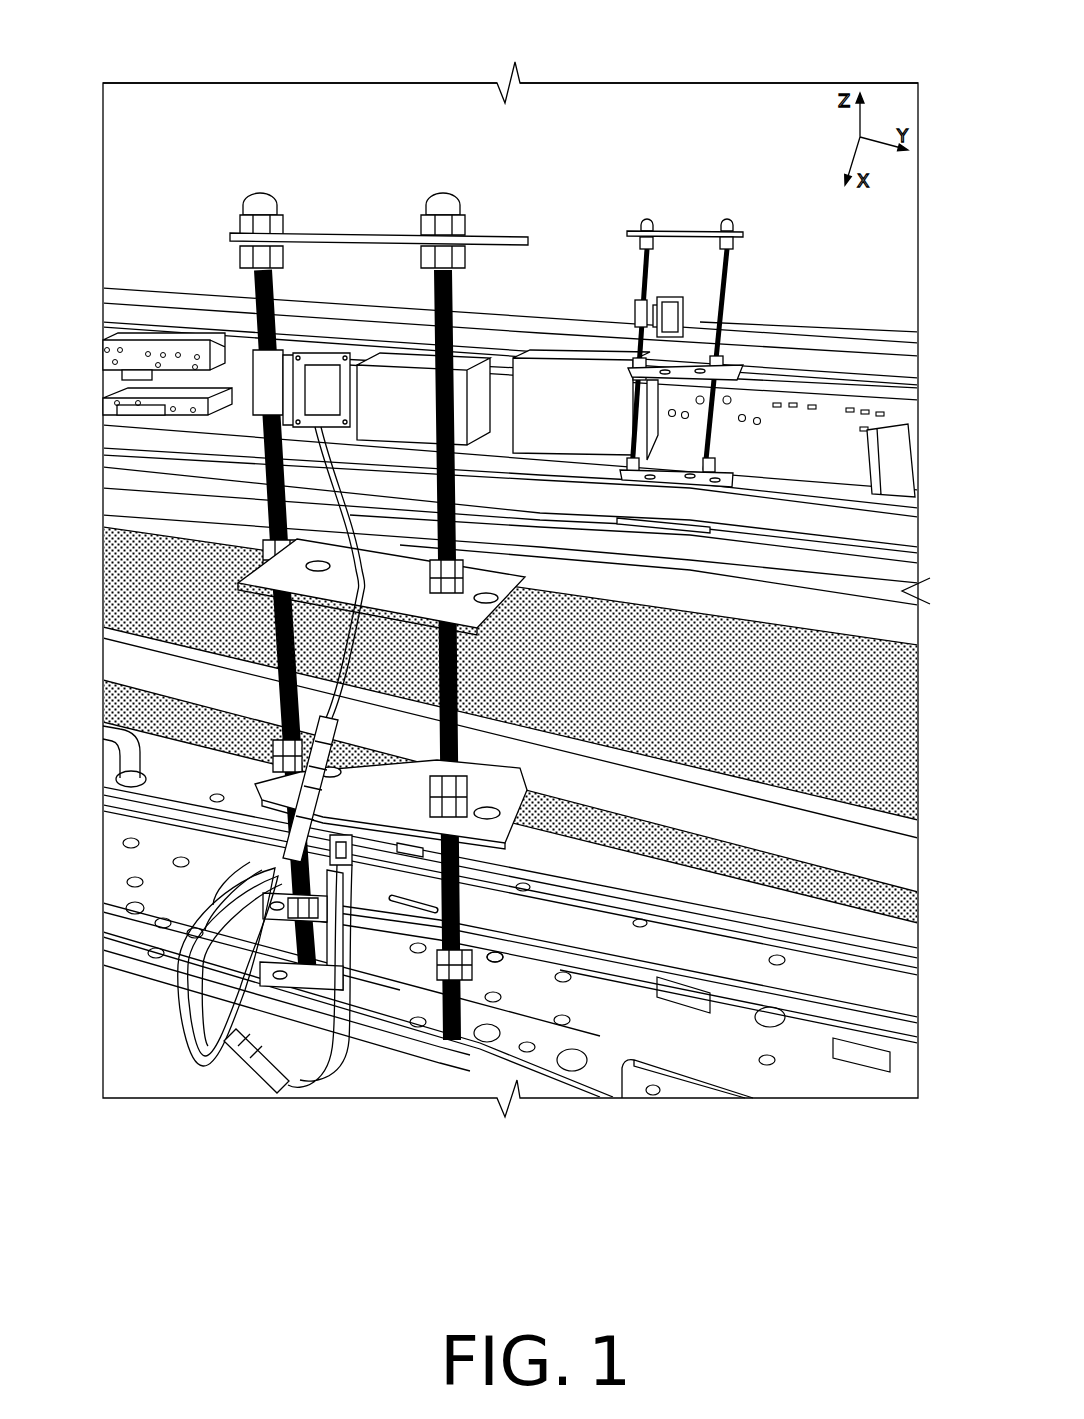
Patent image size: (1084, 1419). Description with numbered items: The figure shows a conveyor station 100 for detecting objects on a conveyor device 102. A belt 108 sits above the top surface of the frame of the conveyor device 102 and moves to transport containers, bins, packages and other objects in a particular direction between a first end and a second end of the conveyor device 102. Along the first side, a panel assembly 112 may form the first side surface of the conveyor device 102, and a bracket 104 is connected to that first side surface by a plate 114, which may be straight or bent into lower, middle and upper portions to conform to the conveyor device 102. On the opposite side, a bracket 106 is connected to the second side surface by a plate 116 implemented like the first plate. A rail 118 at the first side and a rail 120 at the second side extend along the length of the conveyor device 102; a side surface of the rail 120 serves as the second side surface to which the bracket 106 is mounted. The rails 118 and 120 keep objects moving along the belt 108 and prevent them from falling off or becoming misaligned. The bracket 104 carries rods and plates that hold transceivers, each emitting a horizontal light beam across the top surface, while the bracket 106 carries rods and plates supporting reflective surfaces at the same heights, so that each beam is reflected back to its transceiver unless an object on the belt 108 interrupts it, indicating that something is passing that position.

The conveyor station 100 is at (148, 46).
The conveyor device 102 is at (400, 82).
The bracket 104 is at (382, 655).
The bracket 106 is at (699, 357).
The belt 108 is at (700, 713).
The panel assembly 112 is at (537, 1017).
The plate 114 is at (505, 952).
The plate 116 is at (735, 490).
The rail 118 is at (617, 820).
The rail 120 is at (817, 478).